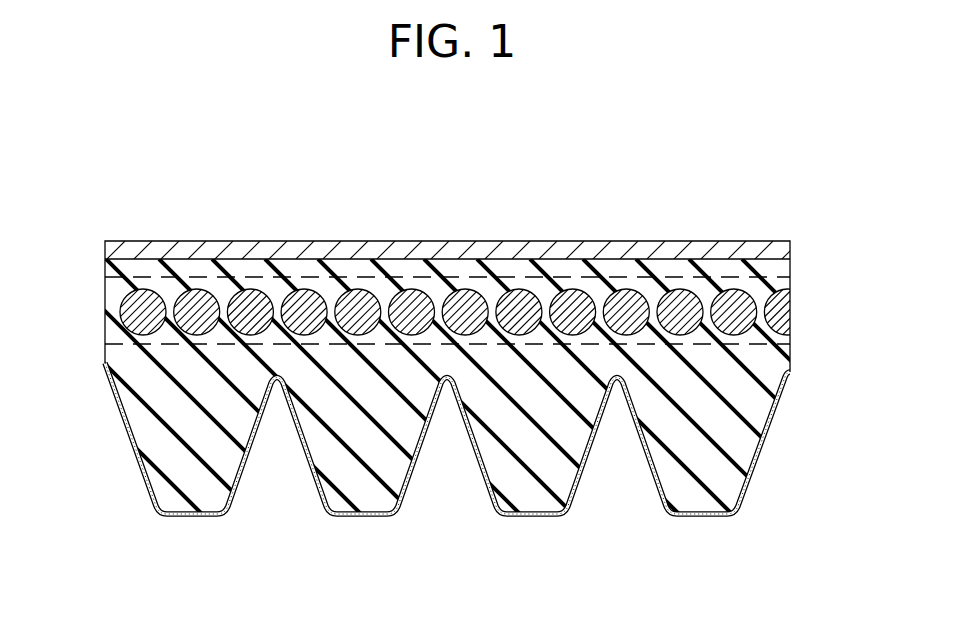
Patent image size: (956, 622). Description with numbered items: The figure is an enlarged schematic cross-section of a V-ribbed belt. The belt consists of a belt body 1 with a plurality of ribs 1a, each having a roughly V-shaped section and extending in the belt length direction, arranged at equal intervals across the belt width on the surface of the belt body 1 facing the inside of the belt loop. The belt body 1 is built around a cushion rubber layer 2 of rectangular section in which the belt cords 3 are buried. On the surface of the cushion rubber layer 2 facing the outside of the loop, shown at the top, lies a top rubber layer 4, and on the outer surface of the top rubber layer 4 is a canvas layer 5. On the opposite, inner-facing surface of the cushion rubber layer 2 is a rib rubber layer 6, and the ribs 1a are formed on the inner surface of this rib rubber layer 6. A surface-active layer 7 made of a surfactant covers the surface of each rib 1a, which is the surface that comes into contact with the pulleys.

The belt body 1 is at (105, 263).
The rib 1a is at (187, 517).
The cushion rubber layer 2 is at (790, 285).
The belt cord 3 is at (383, 333).
The top rubber layer 4 is at (790, 268).
The canvas layer 5 is at (790, 241).
The rib rubber layer 6 is at (790, 353).
The surface-active layer 7 is at (762, 457).